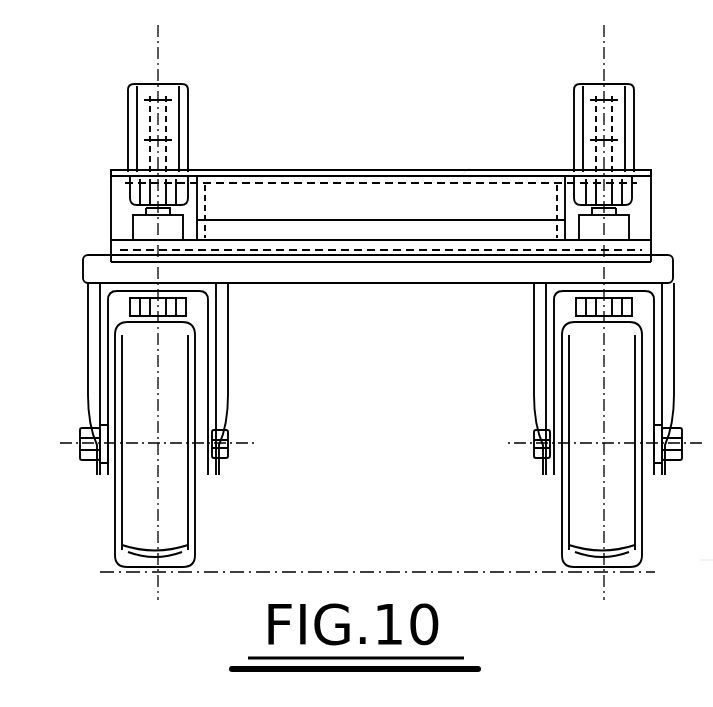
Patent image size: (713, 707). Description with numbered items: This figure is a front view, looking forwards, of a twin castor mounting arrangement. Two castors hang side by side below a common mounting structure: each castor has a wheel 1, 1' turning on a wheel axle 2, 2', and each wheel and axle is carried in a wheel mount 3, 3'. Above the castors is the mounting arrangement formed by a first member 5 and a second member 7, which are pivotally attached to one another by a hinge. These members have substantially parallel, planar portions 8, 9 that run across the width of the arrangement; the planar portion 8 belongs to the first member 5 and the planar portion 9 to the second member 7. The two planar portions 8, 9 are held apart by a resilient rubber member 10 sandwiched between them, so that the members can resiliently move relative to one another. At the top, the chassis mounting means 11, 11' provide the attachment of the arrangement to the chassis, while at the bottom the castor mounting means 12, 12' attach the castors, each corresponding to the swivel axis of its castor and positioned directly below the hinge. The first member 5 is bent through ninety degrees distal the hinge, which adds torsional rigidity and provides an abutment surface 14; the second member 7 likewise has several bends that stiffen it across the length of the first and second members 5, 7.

The wheel 1 is at (595, 488).
The wheel 1' is at (152, 485).
The wheel axle 2 is at (603, 469).
The wheel axle 2' is at (140, 420).
The wheel mount 3 is at (614, 379).
The wheel mount 3' is at (129, 363).
The first member 5 is at (466, 150).
The second member 7 is at (465, 300).
The planar portion 8 is at (297, 170).
The planar portion 9 is at (290, 262).
The resilient rubber member 10 is at (372, 230).
The chassis mounting means 11 is at (574, 151).
The chassis mounting means 11' is at (125, 130).
The castor mounting means 12 is at (643, 328).
The castor mounting means 12' is at (100, 328).
The abutment surface 14 is at (697, 543).